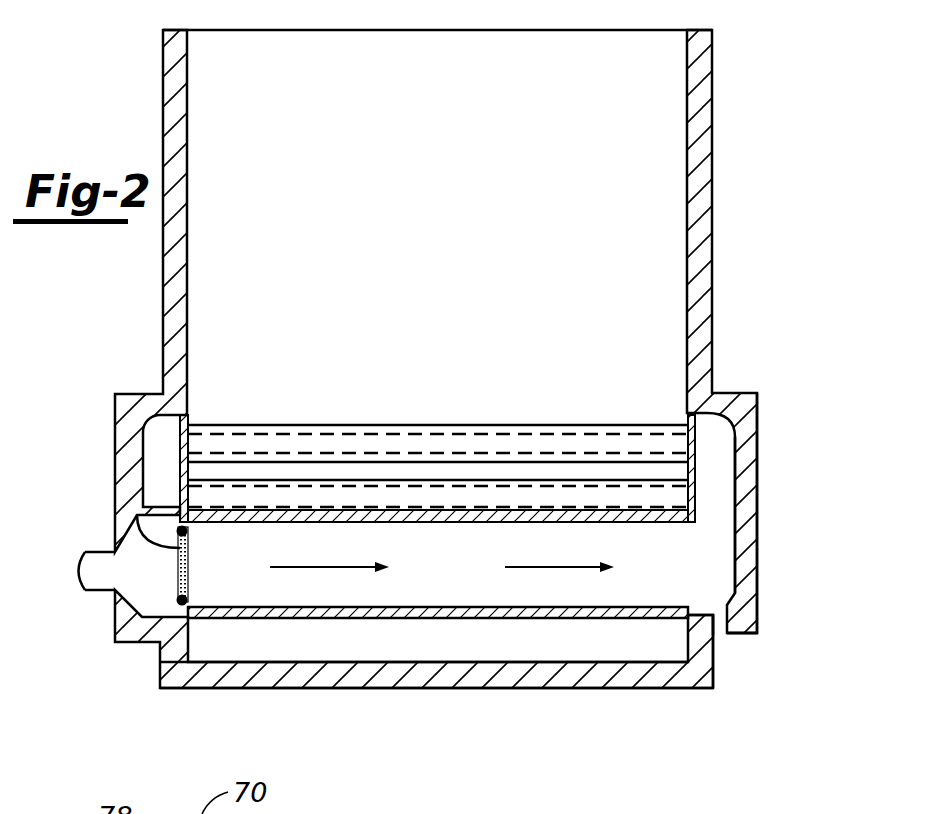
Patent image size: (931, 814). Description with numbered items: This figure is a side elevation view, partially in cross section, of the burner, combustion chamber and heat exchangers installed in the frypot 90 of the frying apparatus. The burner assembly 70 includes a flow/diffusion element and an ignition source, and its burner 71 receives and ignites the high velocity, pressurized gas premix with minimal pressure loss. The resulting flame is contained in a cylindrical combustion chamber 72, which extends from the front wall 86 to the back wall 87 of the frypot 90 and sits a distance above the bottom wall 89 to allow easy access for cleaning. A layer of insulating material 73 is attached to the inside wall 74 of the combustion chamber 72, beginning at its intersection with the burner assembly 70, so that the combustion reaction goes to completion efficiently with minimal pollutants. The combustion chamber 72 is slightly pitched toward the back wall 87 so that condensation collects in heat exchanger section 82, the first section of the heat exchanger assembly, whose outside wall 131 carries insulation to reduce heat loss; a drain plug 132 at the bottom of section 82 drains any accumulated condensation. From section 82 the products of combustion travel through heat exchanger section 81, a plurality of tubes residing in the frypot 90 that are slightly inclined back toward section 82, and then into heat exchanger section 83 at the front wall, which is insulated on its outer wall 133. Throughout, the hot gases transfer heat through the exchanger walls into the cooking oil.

The frypot 90 is at (700, 29).
The front wall 86 is at (187, 325).
The back wall 87 is at (687, 265).
The heat exchanger section 81 is at (433, 430).
The heat exchanger section 83 is at (153, 438).
The outer wall 133 is at (130, 477).
The burner 71 is at (133, 540).
The combustion chamber 72 is at (442, 584).
The burner assembly 70 is at (210, 620).
The inside wall 74 is at (328, 618).
The bottom wall 89 is at (522, 662).
The insulating material 73 is at (627, 610).
The outside wall 131 is at (735, 497).
The heat exchanger section 82 is at (718, 560).
The drain plug 132 is at (715, 638).